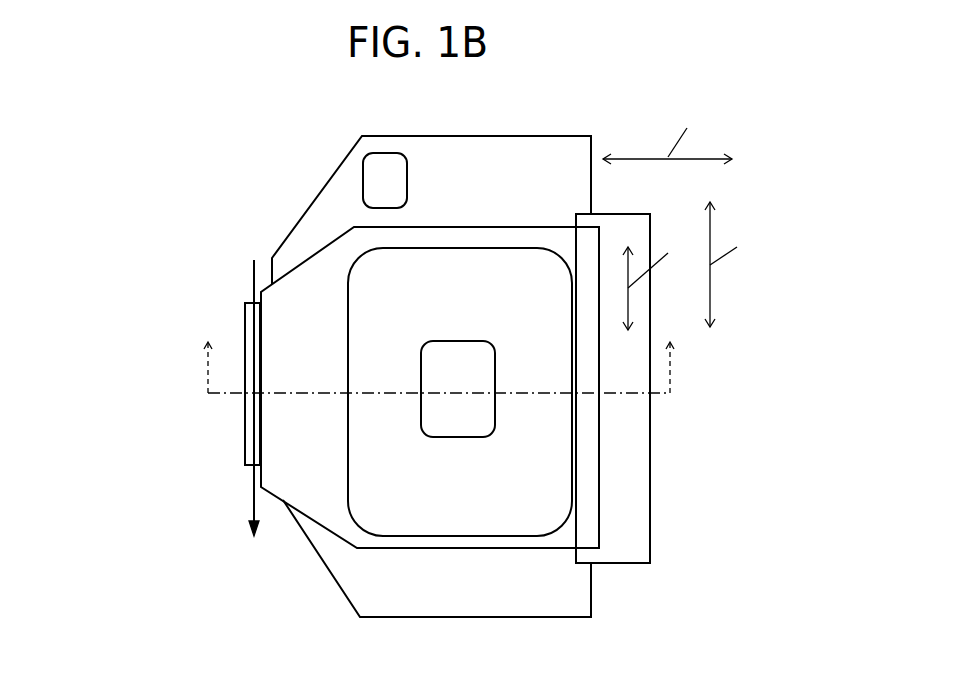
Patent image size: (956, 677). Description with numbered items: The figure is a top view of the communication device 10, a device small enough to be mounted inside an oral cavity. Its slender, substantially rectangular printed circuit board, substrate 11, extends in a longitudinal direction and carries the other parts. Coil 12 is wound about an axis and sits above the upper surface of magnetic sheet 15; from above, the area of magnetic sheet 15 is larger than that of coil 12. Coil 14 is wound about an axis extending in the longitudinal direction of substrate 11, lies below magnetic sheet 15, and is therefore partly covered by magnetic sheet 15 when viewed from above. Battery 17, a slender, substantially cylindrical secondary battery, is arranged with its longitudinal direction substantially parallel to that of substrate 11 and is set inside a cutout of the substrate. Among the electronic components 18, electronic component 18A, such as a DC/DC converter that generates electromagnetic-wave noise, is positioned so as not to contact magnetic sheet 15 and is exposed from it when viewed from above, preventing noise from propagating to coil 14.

The communication device 10 is at (161, 152).
The substrate 11 is at (390, 588).
The coil 12 is at (388, 305).
The coil 14 is at (248, 440).
The magnetic sheet 15 is at (305, 463).
The battery 17 is at (628, 443).
The electronic components 18 is at (317, 173).
The electronic component 18A is at (382, 182).